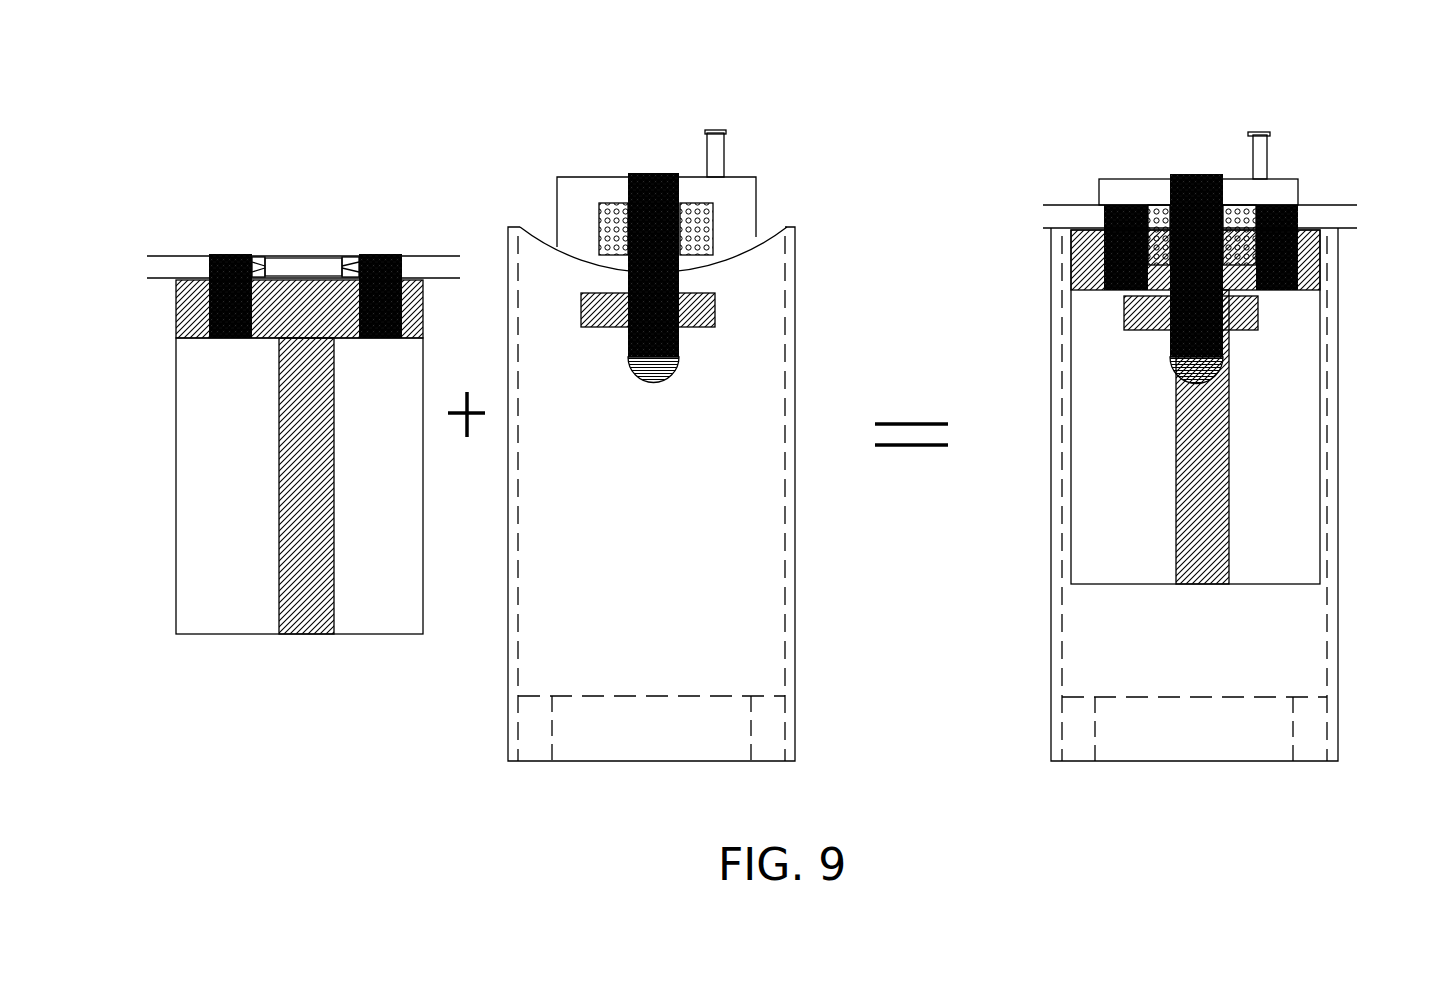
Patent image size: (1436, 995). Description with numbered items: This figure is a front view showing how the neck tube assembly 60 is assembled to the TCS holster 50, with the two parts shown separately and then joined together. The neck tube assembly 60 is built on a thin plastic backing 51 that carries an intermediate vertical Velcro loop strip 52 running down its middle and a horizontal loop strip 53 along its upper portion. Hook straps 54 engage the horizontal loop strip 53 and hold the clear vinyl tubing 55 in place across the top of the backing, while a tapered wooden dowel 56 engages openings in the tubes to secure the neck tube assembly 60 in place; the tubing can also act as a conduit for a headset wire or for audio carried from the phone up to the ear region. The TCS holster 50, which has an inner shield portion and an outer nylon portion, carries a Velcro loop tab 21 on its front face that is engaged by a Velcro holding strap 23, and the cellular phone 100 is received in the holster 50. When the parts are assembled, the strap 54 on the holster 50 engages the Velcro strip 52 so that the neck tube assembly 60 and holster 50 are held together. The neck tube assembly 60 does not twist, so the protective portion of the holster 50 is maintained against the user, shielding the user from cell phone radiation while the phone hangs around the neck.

The cellular phone 100 is at (778, 195).
The Velcro loop tab 21 is at (598, 310).
The Velcro holding strap 23 is at (650, 173).
The TCS holster 50 is at (765, 418).
The thin plastic backing 51 is at (394, 615).
The intermediate vertical Velcro loop strip 52 is at (313, 542).
The horizontal loop strip 53 is at (425, 318).
The hook straps 54 is at (383, 258).
The clear vinyl tubing 55 is at (173, 268).
The tapered wooden dowel 56 is at (304, 265).
The neck tube assembly 60 is at (265, 248).